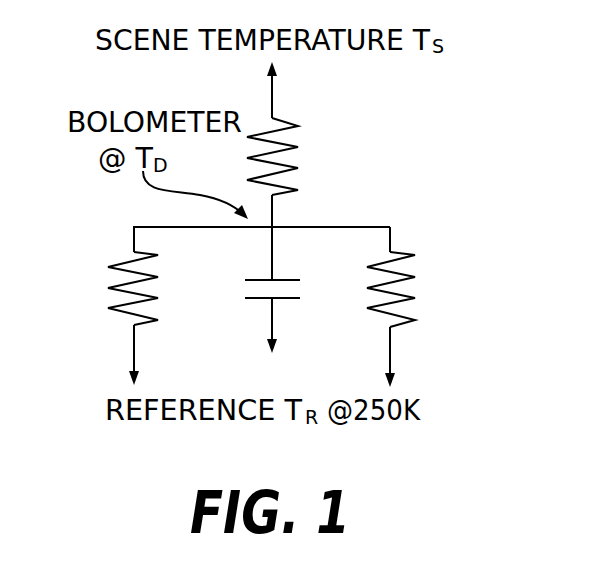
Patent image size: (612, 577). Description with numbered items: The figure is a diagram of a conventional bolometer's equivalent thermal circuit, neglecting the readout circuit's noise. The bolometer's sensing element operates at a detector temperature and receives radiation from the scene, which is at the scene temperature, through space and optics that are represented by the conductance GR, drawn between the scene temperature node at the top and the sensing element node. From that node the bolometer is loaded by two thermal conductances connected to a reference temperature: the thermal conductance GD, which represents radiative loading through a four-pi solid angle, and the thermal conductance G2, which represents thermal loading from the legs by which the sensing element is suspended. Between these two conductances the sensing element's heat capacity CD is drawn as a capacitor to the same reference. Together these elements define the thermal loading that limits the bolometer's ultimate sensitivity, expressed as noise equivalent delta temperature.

The conductance GR is at (297, 156).
The thermal conductance GD is at (112, 306).
The heat capacity CD is at (249, 313).
The thermal conductance G2 is at (417, 307).